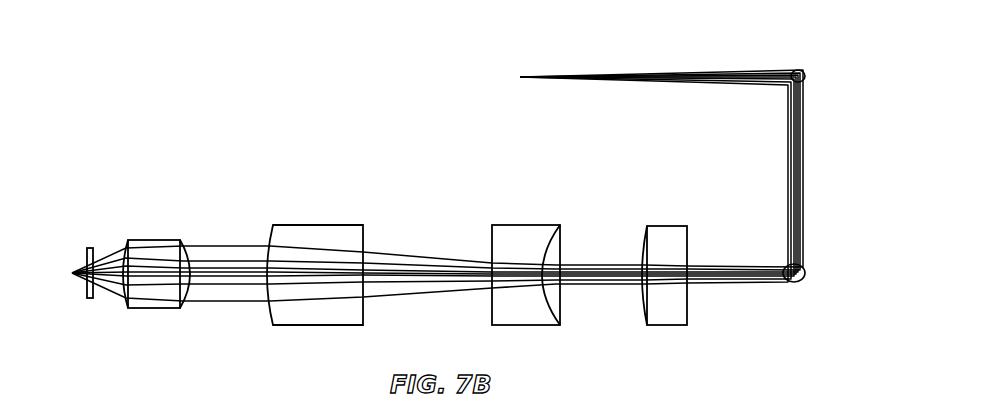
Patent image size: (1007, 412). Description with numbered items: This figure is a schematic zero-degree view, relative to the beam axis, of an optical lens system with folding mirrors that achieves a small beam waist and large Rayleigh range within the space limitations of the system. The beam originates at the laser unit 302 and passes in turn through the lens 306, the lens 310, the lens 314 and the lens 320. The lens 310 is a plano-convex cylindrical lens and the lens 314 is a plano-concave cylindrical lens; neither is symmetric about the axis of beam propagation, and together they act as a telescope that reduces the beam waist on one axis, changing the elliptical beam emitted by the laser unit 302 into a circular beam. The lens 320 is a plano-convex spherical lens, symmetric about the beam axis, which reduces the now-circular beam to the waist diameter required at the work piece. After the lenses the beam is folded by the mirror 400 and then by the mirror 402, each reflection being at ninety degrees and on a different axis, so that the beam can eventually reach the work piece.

The laser unit 302 is at (87, 297).
The lens 306 is at (155, 240).
The plano-convex cylindrical lens 310 is at (308, 325).
The plano-concave cylindrical lens 314 is at (518, 225).
The plano-convex spherical lens 320 is at (672, 226).
The mirror 400 is at (804, 281).
The mirror 402 is at (803, 71).